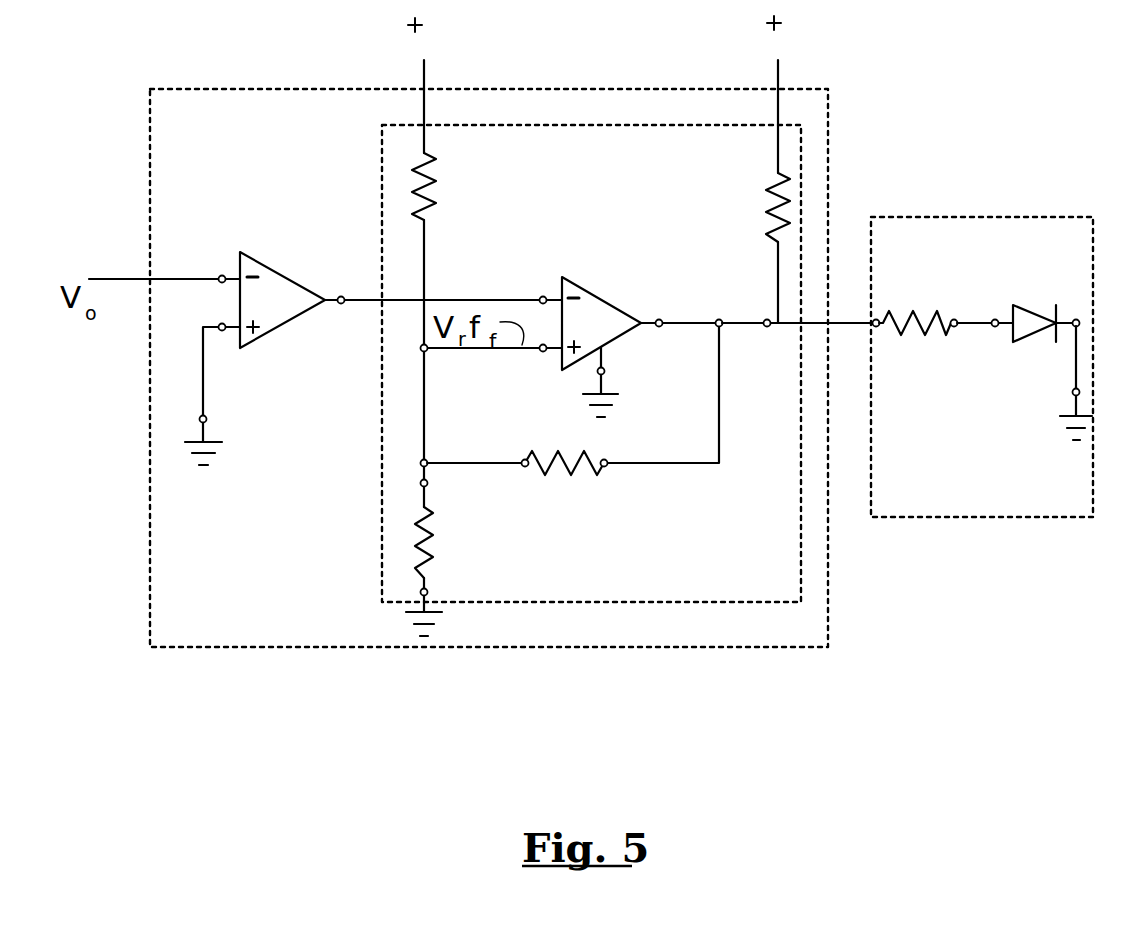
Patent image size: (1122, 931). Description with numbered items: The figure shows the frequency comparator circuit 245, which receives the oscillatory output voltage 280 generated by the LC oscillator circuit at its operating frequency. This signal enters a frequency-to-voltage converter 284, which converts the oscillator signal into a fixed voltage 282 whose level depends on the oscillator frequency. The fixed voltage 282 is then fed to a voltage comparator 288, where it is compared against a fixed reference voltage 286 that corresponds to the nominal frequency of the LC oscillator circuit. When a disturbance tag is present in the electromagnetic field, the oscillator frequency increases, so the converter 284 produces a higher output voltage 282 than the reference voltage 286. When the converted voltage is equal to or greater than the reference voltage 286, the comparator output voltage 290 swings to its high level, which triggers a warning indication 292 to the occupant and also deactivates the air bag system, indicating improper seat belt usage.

The frequency comparator circuit 245 is at (343, 658).
The oscillatory output voltage 280 is at (149, 262).
The fixed voltage 282 is at (341, 304).
The frequency-to-voltage converter 284 is at (281, 181).
The reference voltage 286 is at (530, 355).
The voltage comparator 288 is at (608, 211).
The comparator output voltage 290 is at (848, 338).
The warning indication 292 is at (993, 315).